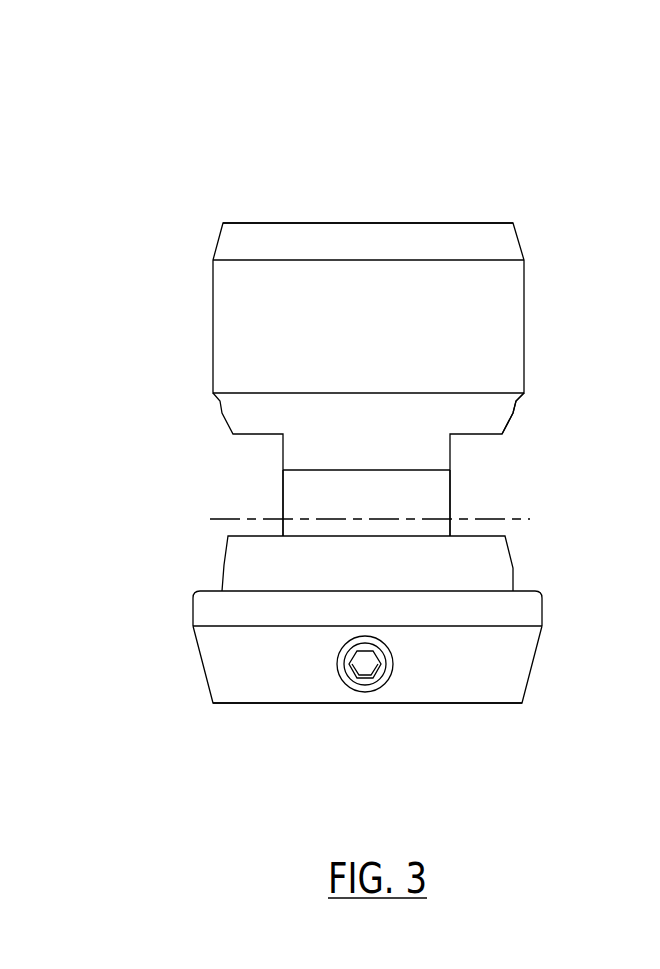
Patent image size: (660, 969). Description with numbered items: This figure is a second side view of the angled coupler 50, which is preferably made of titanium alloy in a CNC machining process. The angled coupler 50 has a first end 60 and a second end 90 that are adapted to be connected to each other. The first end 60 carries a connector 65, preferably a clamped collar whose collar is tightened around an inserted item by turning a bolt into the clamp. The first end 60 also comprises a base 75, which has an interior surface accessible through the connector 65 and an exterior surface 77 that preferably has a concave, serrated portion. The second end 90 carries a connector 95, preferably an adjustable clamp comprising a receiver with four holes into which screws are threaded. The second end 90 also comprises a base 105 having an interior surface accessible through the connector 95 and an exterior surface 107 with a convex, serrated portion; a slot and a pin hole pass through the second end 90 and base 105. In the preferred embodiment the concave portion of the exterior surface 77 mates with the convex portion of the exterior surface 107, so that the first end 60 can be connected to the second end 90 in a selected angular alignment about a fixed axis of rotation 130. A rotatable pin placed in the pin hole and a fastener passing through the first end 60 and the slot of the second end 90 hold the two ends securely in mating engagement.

The angled coupler 50 is at (257, 168).
The first end 60 is at (212, 313).
The connector 65 is at (353, 223).
The base 75 is at (507, 425).
The exterior surface 77 is at (432, 447).
The exterior surface 107 is at (428, 495).
The fixed axis of rotation 130 is at (238, 518).
The base 105 is at (513, 568).
The second end 90 is at (205, 677).
The connector 95 is at (433, 703).